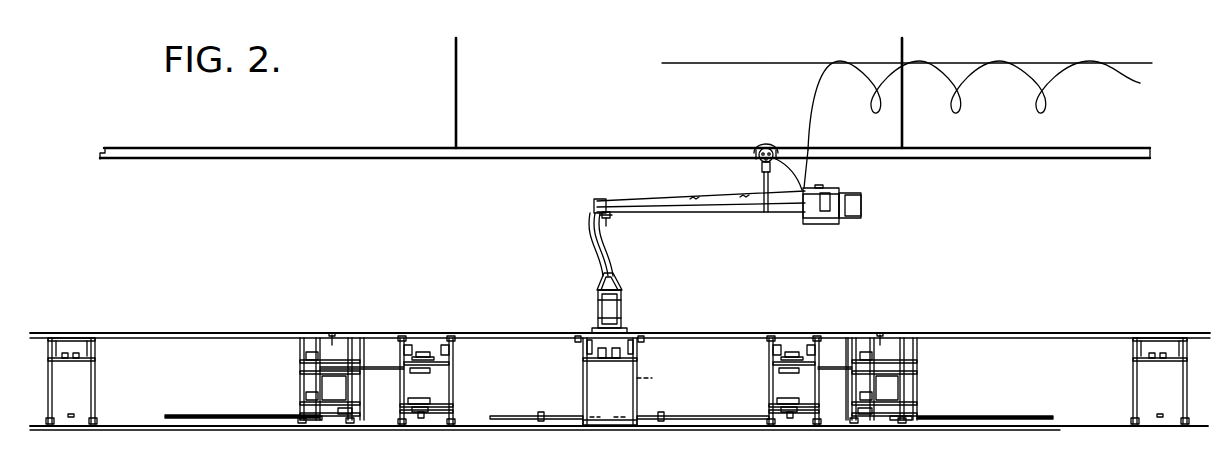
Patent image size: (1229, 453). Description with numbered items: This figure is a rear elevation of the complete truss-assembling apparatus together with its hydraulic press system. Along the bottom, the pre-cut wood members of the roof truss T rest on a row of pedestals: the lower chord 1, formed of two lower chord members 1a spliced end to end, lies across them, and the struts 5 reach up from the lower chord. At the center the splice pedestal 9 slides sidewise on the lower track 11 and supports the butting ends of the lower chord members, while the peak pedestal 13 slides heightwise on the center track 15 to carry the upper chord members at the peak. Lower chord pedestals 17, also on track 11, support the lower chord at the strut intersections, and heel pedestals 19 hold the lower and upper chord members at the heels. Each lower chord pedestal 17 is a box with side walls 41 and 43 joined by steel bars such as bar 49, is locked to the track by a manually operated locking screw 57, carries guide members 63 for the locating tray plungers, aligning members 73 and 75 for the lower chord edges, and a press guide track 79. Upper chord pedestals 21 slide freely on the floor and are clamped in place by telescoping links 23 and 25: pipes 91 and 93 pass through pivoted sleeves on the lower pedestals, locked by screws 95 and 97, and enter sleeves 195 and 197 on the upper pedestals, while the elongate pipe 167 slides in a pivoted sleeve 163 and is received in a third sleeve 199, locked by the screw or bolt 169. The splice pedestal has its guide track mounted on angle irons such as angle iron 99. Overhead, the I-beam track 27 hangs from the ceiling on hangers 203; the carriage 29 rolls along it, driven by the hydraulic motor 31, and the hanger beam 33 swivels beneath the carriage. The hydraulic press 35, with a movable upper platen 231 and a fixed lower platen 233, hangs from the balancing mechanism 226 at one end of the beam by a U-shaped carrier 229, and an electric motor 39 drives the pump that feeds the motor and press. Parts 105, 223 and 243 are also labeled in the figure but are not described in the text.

The lower chord 1 is at (256, 333).
The lower chord members 1a is at (520, 338).
The roof truss T is at (502, 329).
The struts 5 is at (471, 449).
The splice pedestal 9 is at (578, 391).
The lower track 11 is at (134, 425).
The peak pedestal 13 is at (676, 380).
The center track 15 is at (617, 425).
The lower chord pedestals 17 is at (462, 382).
The heel pedestals 19 is at (101, 377).
The upper chord pedestals 21 is at (294, 380).
The telescoping links 23 is at (388, 402).
The telescoping links 25 is at (481, 415).
The track or I-beam 27 is at (276, 157).
The carriage 29 is at (754, 165).
The hydraulic motor 31 is at (766, 141).
The hanger beam 33 is at (712, 207).
The hydraulic press 35 is at (614, 311).
The electric motor 39 is at (846, 220).
The side wall 41 is at (583, 399).
The side wall 43 is at (453, 396).
The steel bar 49 is at (449, 364).
The locking screw 57 is at (420, 418).
The guide members 63 is at (453, 349).
The aligning member 73 is at (402, 336).
The aligning member 75 is at (453, 336).
The press guide track 79 is at (68, 360).
The pipe 91 is at (372, 380).
The pipe 93 is at (378, 363).
The locking screw 95 is at (788, 398).
The locking screw 97 is at (424, 373).
The angle iron 99 is at (616, 360).
The stop 105 is at (566, 342).
The sleeves 163 is at (543, 413).
The elongate pipe 167 is at (208, 415).
The locking screw 169 is at (346, 416).
The sleeve 195 is at (310, 398).
The sleeve 197 is at (304, 356).
The third sleeve 199 is at (318, 420).
The hangers 203 is at (455, 125).
The rod 223 is at (766, 212).
The balancing mechanism 226 is at (612, 219).
The U-shaped carrier 229 is at (620, 287).
The upper platen 231 is at (592, 328).
The lower platen 233 is at (631, 389).
The housing 243 is at (814, 218).